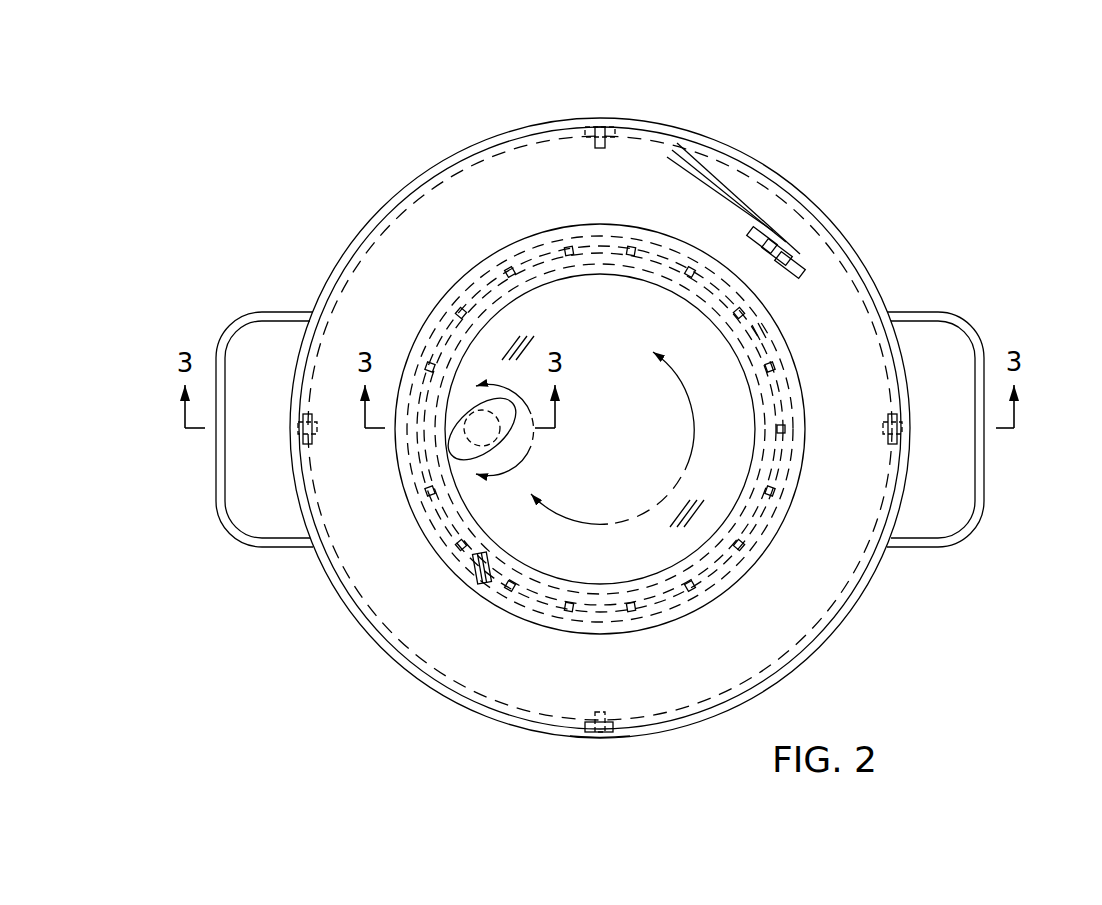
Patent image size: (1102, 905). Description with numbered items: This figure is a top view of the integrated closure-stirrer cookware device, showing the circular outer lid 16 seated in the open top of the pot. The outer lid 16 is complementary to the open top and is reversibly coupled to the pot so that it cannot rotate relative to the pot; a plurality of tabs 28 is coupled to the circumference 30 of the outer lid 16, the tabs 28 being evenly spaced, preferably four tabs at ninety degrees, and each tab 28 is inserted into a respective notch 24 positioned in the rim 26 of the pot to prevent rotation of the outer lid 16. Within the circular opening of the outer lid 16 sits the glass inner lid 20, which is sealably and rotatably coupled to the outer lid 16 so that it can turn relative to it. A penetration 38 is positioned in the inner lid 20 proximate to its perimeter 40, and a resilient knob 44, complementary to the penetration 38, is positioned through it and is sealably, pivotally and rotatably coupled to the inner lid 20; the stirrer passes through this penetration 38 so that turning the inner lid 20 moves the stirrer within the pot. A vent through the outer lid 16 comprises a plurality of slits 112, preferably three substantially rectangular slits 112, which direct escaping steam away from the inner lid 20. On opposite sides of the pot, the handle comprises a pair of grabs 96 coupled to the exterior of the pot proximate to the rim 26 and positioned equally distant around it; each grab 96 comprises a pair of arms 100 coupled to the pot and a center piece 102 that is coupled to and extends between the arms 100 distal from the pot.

The outer lid 16 is at (530, 202).
The inner lid 20 is at (655, 305).
The notch 24 is at (607, 722).
The rim 26 is at (678, 127).
The tab 28 is at (600, 736).
The circumference 30 is at (808, 650).
The penetration 38 is at (493, 402).
The perimeter 40 is at (475, 342).
The knob 44 is at (484, 428).
The grab 96 is at (233, 538).
The arm 100 is at (939, 323).
The center piece 102 is at (988, 470).
The slit 112 is at (808, 243).